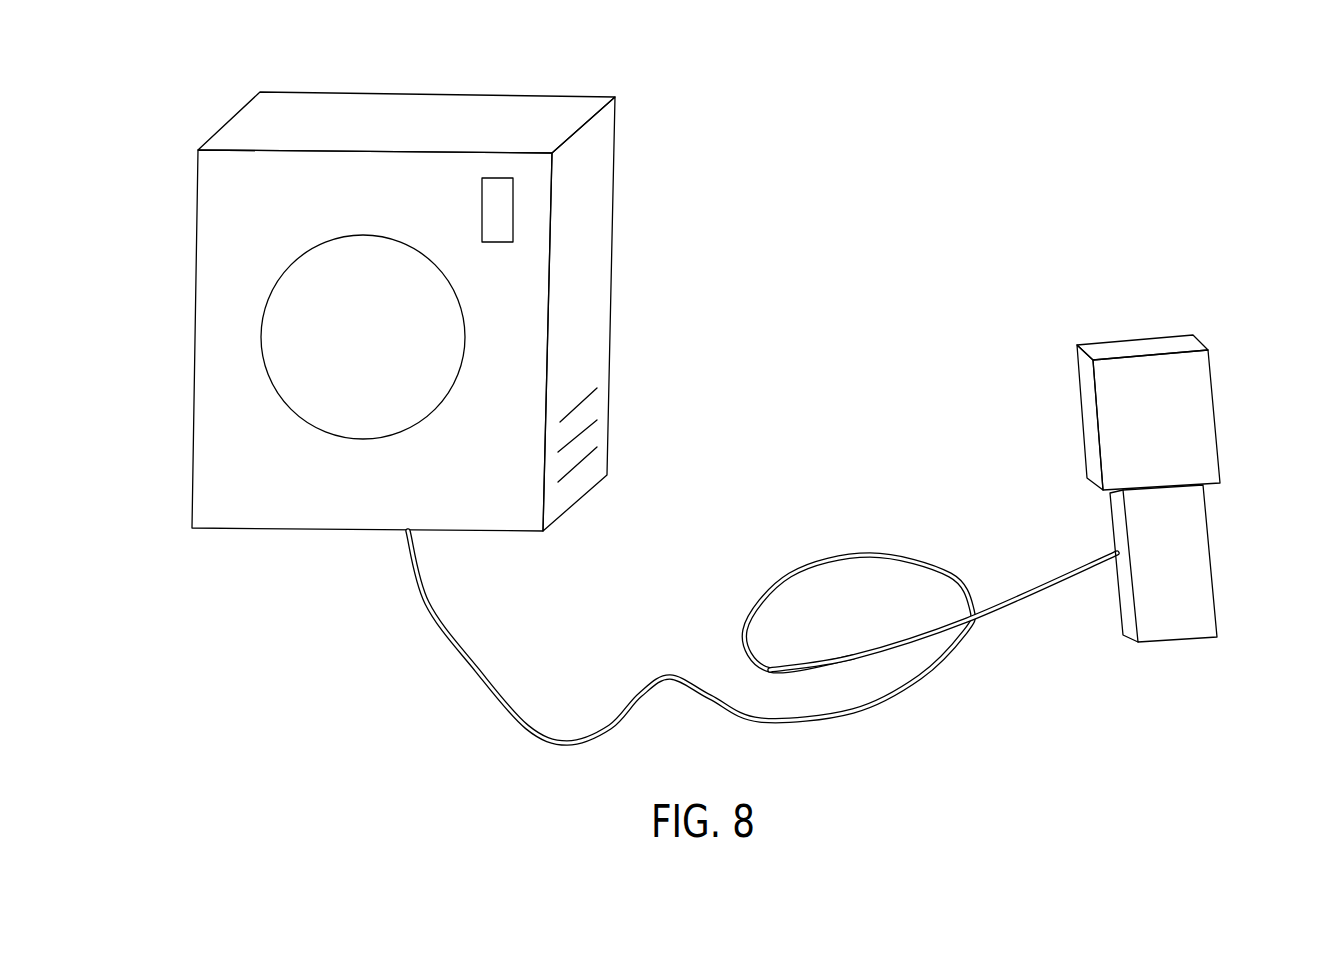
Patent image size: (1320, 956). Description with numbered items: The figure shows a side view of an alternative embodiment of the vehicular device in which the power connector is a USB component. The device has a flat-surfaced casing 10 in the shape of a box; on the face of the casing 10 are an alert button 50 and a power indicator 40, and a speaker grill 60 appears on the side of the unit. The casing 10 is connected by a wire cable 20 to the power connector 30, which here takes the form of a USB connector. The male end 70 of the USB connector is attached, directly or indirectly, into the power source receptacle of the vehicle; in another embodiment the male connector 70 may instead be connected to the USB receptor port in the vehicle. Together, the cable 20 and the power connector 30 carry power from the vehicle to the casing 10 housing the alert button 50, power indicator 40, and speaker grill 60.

The casing 10 is at (158, 489).
The wire cable 20 is at (430, 601).
The power connector 30 is at (1248, 499).
The power indicator 40 is at (497, 178).
The alert button 50 is at (318, 409).
The speaker grill 60 is at (592, 410).
The male end 70 is at (1200, 595).